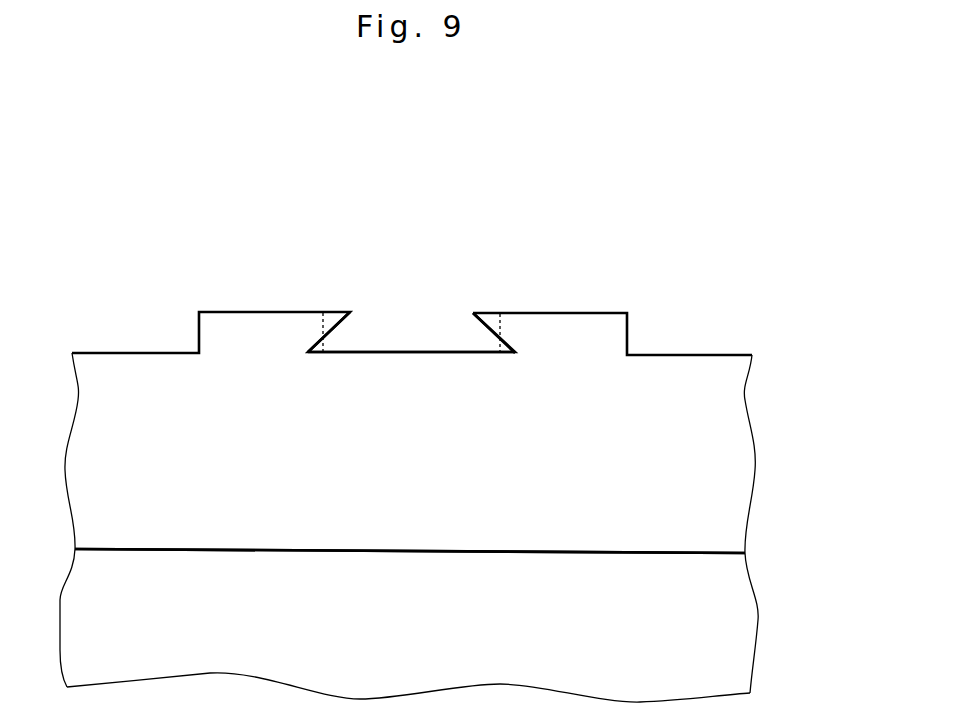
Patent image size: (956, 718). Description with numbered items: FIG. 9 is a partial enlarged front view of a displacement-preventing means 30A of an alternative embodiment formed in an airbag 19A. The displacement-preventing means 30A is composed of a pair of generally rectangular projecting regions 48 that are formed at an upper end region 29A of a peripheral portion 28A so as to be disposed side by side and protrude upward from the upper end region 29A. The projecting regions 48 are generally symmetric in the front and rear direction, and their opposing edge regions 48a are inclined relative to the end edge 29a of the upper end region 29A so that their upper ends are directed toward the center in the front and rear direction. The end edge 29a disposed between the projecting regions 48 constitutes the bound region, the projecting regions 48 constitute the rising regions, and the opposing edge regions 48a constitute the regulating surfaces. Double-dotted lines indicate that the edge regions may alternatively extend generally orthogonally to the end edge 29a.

The projecting region 48 is at (272, 300).
The opposing edge region 48a is at (332, 330).
The displacement-preventing means 30A is at (378, 310).
The end edge 29a is at (410, 355).
The airbag 19A is at (672, 305).
The upper end region 29A is at (692, 393).
The peripheral portion 28A is at (410, 551).